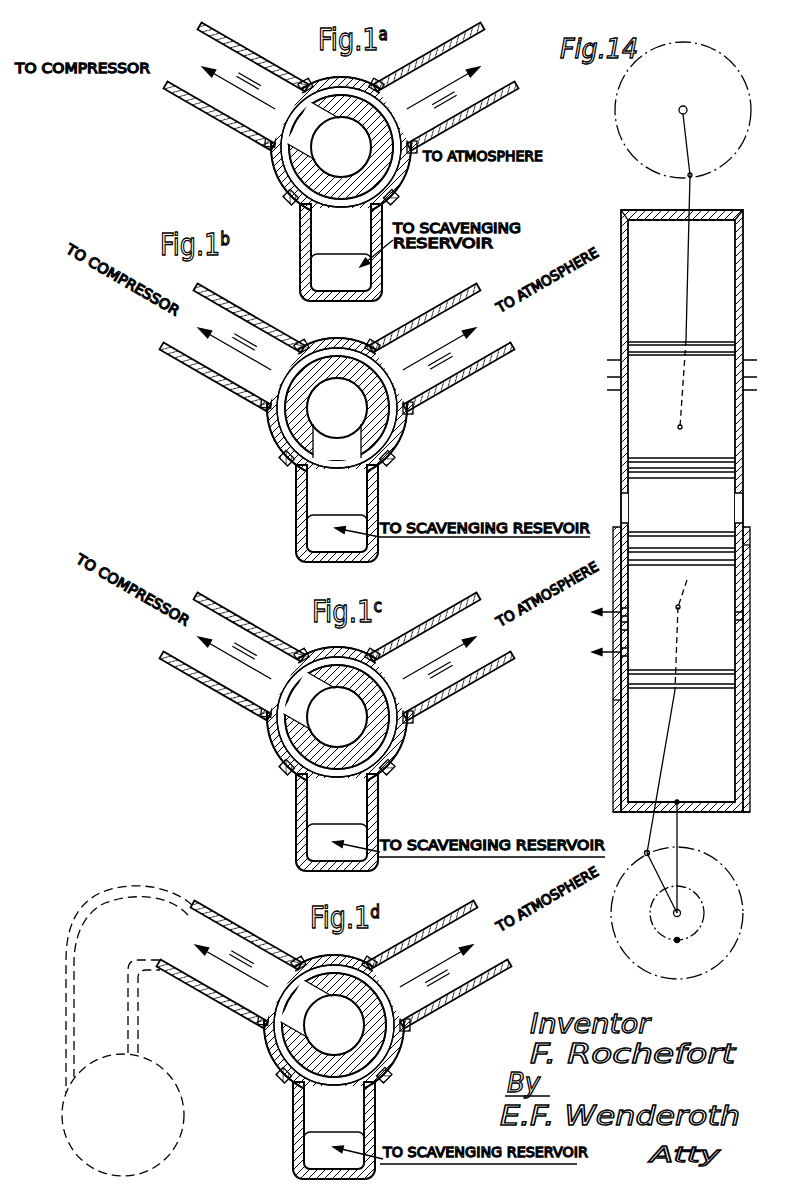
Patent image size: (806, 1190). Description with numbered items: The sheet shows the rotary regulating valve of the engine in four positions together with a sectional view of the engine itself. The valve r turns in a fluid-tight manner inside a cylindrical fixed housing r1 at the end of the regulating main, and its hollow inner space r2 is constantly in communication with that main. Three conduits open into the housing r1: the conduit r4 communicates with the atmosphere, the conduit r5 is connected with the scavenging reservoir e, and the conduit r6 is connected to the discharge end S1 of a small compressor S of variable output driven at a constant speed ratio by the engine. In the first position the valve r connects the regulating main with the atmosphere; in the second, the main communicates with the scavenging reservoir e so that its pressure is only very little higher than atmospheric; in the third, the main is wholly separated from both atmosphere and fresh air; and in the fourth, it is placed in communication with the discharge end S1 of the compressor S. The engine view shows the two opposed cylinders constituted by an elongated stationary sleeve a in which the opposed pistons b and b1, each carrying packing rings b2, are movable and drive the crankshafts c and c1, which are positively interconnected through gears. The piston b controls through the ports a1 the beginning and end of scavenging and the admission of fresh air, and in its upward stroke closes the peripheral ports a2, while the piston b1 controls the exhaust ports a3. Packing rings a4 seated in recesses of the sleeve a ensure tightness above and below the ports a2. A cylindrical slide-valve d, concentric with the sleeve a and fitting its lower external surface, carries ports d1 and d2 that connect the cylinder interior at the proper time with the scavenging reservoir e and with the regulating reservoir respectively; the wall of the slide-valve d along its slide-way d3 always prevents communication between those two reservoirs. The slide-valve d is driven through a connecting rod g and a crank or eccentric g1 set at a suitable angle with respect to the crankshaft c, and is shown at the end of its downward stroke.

In FIG. 1A, the valve r is at (328, 147).
In FIG. 1B, the valve r is at (330, 408).
In FIG. 1C, the valve r is at (335, 717).
In FIG. 1D, the valve r is at (326, 1025).
In FIG. 1A, the cylindrical fixed housing r1 is at (341, 125).
In FIG. 1B, the cylindrical fixed housing r1 is at (337, 385).
In FIG. 1C, the cylindrical fixed housing r1 is at (337, 695).
In FIG. 1D, the cylindrical fixed housing r1 is at (334, 1002).
In FIG. 1A, the hollow inner space r2 is at (359, 148).
In FIG. 1B, the hollow inner space r2 is at (371, 419).
In FIG. 1C, the hollow inner space r2 is at (355, 718).
In FIG. 1D, the hollow inner space r2 is at (354, 1030).
In FIG. 1A, the conduit r4 is at (445, 87).
In FIG. 1B, the conduit r4 is at (441, 346).
In FIG. 1C, the conduit r4 is at (441, 651).
In FIG. 1D, the conduit r4 is at (438, 957).
In FIG. 1A, the conduit r5 is at (323, 252).
In FIG. 1B, the conduit r5 is at (316, 513).
In FIG. 1C, the conduit r5 is at (318, 822).
In FIG. 1D, the conduit r5 is at (316, 1130).
In FIG. 1A, the conduit r6 is at (236, 87).
In FIG. 1B, the conduit r6 is at (232, 348).
In FIG. 1C, the conduit r6 is at (232, 657).
In FIG. 1D, the conduit r6 is at (229, 965).
In FIG. 1D, the small compressor S is at (132, 1115).
In FIG. 1D, the discharge end S1 is at (129, 968).
In FIG. 14, the stationary sleeve a is at (738, 485).
In FIG. 14, the ports a1 is at (628, 652).
In FIG. 14, the ports a2 is at (624, 612).
In FIG. 14, the exhaust ports a3 is at (607, 378).
In FIG. 14, the packing rings a4 is at (628, 626).
In FIG. 14, the piston b is at (681, 610).
In FIG. 14, the piston b1 is at (681, 410).
In FIG. 14, the packing rings b2 is at (683, 462).
In FIG. 14, the crankshaft c is at (658, 880).
In FIG. 14, the crankshaft c1 is at (689, 142).
In FIG. 14, the cylindrical slide-valve d is at (613, 592).
In FIG. 14, the port d1 is at (613, 702).
In FIG. 14, the port d2 is at (613, 626).
In FIG. 14, the slide-way d3 is at (742, 548).
In FIG. 14, the scavenging reservoir e is at (610, 663).
In FIG. 14, the connecting rod g is at (682, 830).
In FIG. 14, the crank or eccentric g1 is at (680, 940).